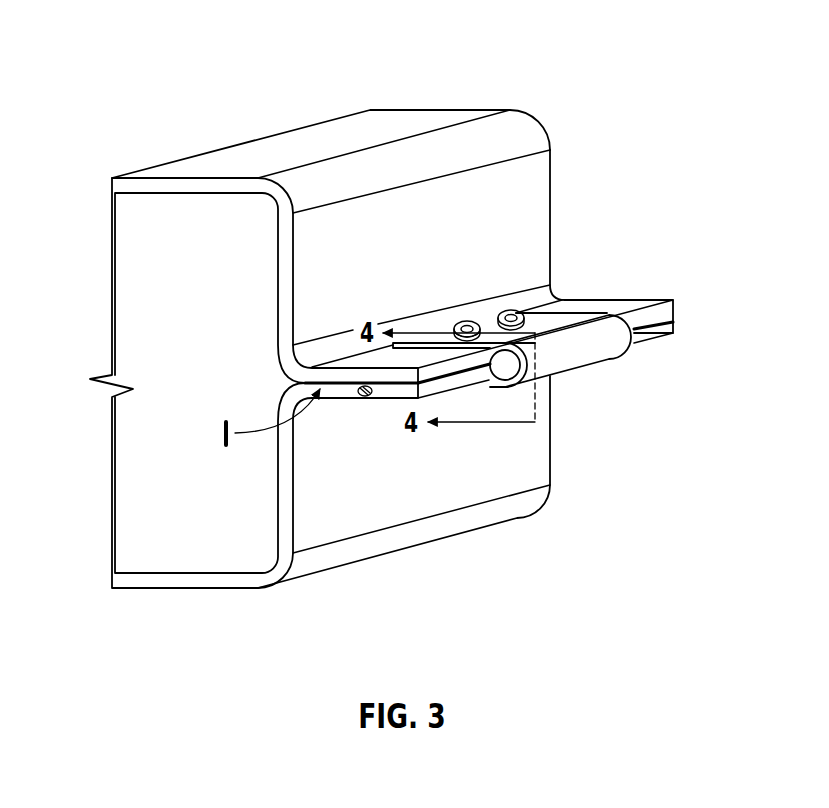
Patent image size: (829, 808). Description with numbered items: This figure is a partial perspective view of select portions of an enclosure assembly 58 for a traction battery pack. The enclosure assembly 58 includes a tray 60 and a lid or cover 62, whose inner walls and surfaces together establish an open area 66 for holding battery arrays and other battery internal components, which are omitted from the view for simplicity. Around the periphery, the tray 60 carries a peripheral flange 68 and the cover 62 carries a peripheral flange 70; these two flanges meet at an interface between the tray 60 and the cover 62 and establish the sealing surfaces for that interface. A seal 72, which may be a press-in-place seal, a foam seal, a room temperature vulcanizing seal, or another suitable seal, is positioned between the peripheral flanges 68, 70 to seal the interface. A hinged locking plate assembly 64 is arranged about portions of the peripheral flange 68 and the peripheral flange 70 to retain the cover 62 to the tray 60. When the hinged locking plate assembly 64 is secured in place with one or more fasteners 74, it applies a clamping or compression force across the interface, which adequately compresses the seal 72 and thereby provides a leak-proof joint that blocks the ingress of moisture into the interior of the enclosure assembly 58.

The enclosure assembly 58 is at (554, 67).
The tray 60 is at (188, 595).
The cover 62 is at (279, 146).
The hinged locking plate assembly 64 is at (589, 306).
The open area 66 is at (158, 367).
The peripheral flange 68 is at (332, 395).
The peripheral flange 70 is at (347, 375).
The seal 72 is at (364, 395).
The fastener 74 is at (511, 308).